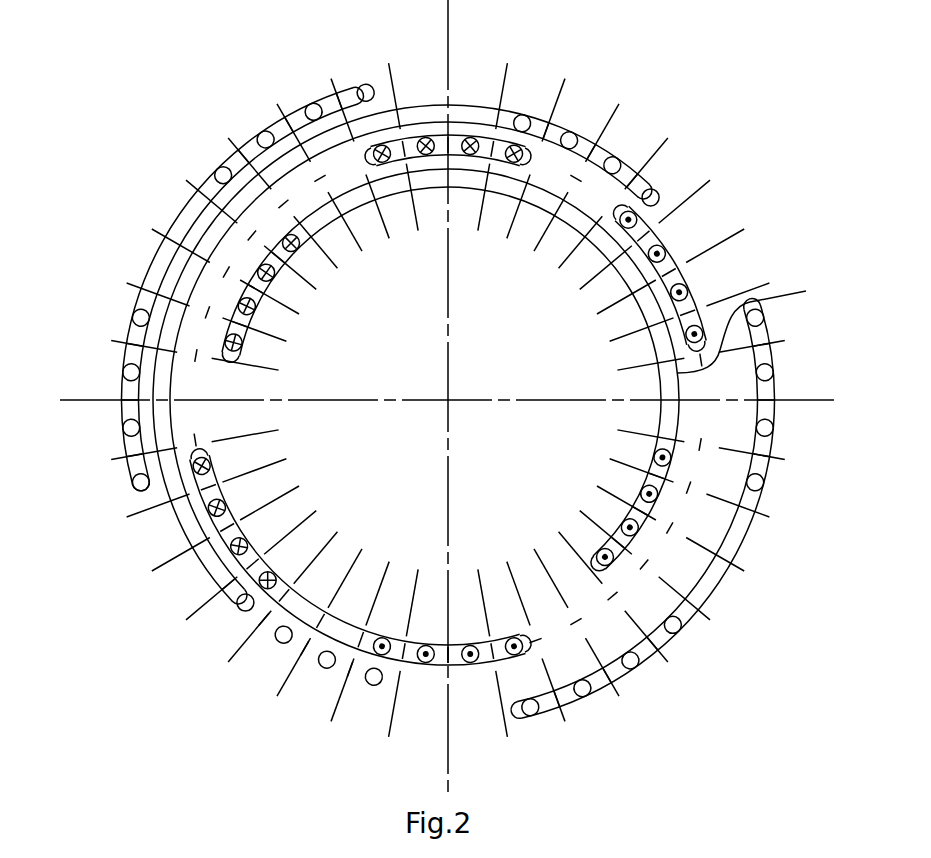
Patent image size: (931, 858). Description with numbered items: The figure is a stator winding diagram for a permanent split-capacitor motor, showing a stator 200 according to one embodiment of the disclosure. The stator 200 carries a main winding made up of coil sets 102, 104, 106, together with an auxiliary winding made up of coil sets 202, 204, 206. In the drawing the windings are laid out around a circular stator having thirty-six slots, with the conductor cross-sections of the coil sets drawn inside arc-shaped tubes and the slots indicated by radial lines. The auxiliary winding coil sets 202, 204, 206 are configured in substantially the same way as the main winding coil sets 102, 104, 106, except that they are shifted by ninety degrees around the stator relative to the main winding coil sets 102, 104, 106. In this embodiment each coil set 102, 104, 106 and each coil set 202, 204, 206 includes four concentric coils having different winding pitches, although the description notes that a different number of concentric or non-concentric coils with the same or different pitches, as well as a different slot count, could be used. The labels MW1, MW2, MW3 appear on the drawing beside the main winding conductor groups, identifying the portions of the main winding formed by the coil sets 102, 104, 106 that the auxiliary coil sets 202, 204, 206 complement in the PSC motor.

The stator 200 is at (145, 192).
The auxiliary winding coil set 202 is at (300, 122).
The auxiliary winding coil set 204 is at (610, 153).
The auxiliary winding coil set 206 is at (667, 638).
The main winding coil set 102 is at (687, 263).
The main winding coil set 104 is at (756, 328).
The main winding coil set 106 is at (447, 660).
The first phase winding MW1 is at (447, 399).
The second phase winding MW2 is at (448, 400).
The third phase winding MW3 is at (448, 400).